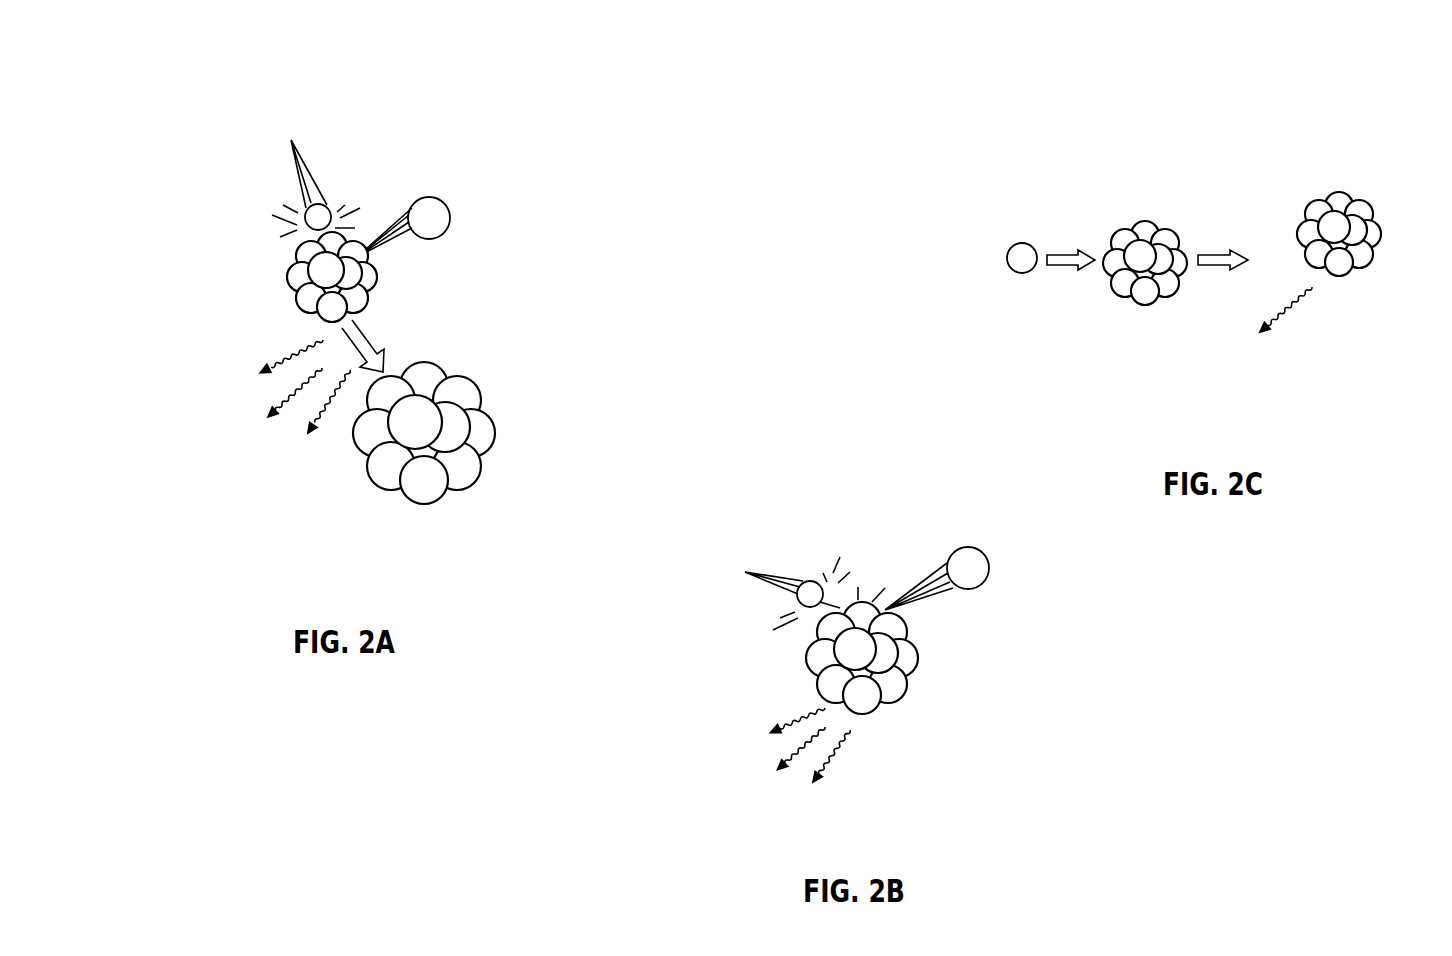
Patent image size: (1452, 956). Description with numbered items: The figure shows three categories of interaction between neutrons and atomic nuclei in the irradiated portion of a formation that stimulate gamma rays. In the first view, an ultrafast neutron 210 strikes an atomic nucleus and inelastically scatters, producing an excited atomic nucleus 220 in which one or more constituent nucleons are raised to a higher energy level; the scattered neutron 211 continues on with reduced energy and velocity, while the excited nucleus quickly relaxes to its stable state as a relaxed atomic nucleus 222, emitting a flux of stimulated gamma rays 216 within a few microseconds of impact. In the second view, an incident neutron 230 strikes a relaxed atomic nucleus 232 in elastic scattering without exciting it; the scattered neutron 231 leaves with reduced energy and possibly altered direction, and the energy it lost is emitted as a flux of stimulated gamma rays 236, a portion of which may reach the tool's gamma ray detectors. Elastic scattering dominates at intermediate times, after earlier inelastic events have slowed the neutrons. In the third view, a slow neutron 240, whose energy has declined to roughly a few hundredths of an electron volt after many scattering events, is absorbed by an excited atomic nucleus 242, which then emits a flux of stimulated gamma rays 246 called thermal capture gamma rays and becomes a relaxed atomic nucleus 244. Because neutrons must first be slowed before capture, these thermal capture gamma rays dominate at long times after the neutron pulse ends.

In FIG. 2A, the ultrafast neutron 210 is at (307, 205).
In FIG. 2A, the scattered neutron 211 is at (443, 201).
In FIG. 2A, the excited atomic nucleus 220 is at (290, 296).
In FIG. 2A, the relaxed atomic nucleus 222 is at (467, 388).
In FIG. 2A, the flux of stimulated gamma rays 216 is at (290, 402).
In FIG. 2B, the incident neutron 230 is at (818, 583).
In FIG. 2B, the scattered neutron 231 is at (970, 590).
In FIG. 2B, the relaxed atomic nucleus 232 is at (807, 670).
In FIG. 2B, the flux of stimulated gamma rays 236 is at (802, 755).
In FIG. 2C, the slow neutron 240 is at (1022, 243).
In FIG. 2C, the excited atomic nucleus 242 is at (1140, 250).
In FIG. 2C, the relaxed atomic nucleus 244 is at (1343, 200).
In FIG. 2C, the flux of stimulated gamma rays 246 is at (1297, 303).